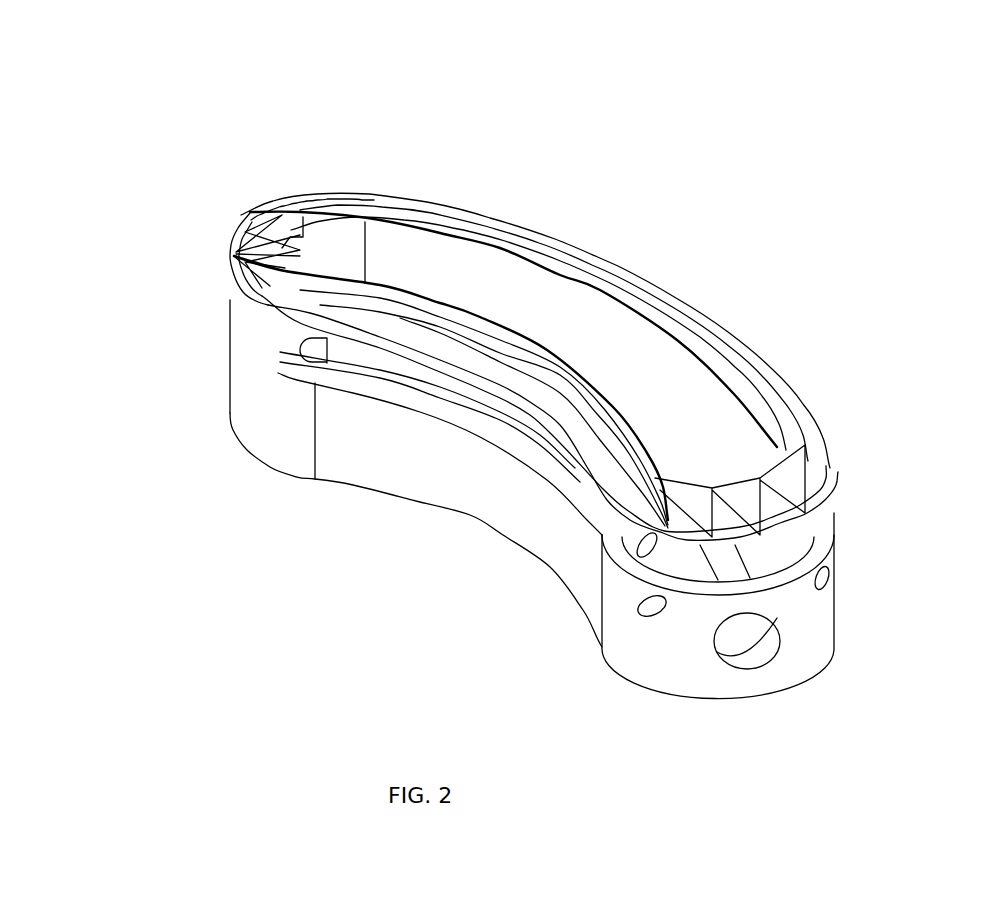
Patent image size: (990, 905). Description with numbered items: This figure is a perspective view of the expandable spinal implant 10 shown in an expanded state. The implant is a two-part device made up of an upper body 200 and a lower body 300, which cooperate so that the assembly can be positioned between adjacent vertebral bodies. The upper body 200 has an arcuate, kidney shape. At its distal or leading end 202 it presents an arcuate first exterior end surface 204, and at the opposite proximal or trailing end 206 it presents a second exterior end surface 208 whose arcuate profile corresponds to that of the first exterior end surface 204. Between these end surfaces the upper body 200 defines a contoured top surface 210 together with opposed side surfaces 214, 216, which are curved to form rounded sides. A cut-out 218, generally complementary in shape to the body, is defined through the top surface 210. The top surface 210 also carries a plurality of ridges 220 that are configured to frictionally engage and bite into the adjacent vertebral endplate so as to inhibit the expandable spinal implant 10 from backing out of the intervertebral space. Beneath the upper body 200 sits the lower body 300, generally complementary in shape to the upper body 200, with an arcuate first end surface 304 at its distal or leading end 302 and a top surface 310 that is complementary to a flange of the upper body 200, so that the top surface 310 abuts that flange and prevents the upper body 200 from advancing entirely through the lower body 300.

The expandable spinal implant 10 is at (696, 140).
The upper body 200 is at (225, 203).
The distal or leading end 202 is at (367, 342).
The first exterior end surface 204 is at (287, 340).
The proximal or trailing end 206 is at (757, 355).
The second exterior end surface 208 is at (677, 297).
The top surface 210 is at (288, 308).
The side surface 214 is at (777, 537).
The side surface 216 is at (232, 247).
The cut-out 218 is at (407, 257).
The ridges 220 is at (235, 275).
The lower body 300 is at (207, 427).
The distal or leading end 302 is at (522, 525).
The first end surface 304 is at (423, 482).
The top surface 310 is at (612, 535).